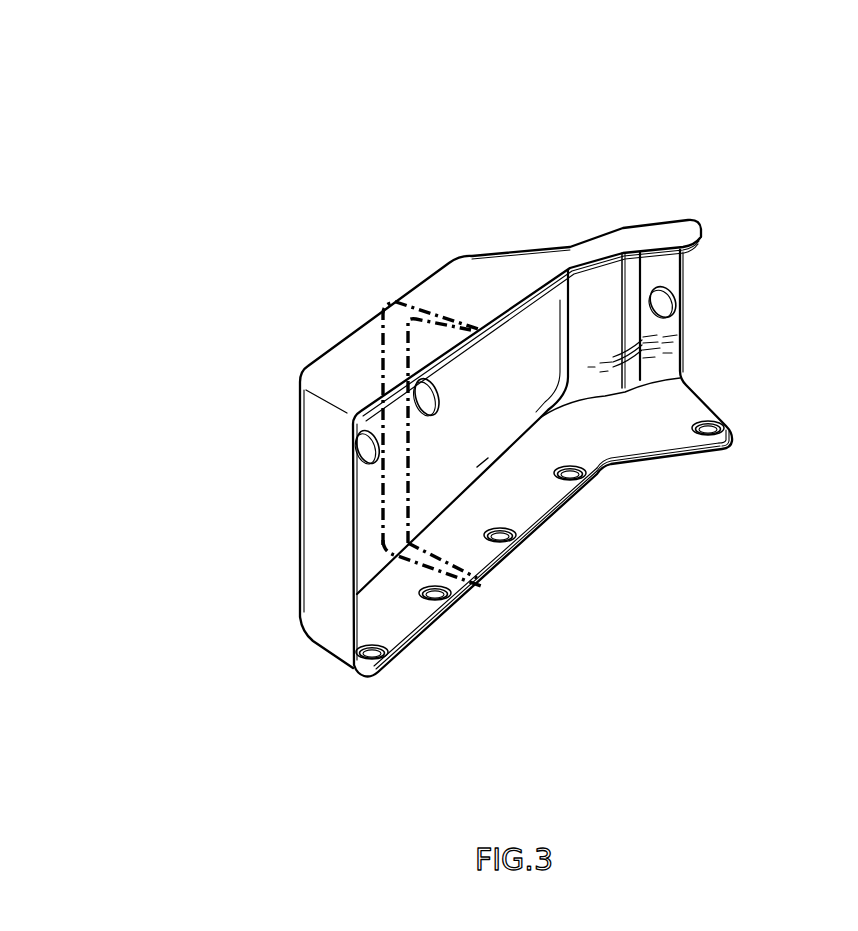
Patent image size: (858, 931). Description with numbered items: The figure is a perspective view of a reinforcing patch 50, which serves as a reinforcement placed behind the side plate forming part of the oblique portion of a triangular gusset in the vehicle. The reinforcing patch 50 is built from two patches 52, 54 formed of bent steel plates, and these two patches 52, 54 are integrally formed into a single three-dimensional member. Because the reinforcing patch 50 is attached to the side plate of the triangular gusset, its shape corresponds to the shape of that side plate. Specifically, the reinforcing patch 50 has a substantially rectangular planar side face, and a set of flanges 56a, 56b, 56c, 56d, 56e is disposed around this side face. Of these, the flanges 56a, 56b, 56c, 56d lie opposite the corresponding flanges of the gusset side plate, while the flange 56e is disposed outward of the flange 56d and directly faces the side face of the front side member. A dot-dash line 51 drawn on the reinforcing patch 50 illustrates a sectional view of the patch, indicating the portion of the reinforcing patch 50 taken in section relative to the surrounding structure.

The reinforcing patch 50 is at (610, 162).
The dot-dash line 51 is at (421, 302).
The patch 52 is at (347, 338).
The patch 54 is at (487, 422).
The flange 56a is at (485, 282).
The flange 56b is at (400, 622).
The flange 56c is at (320, 498).
The flange 56d is at (602, 343).
The flange 56e is at (673, 327).